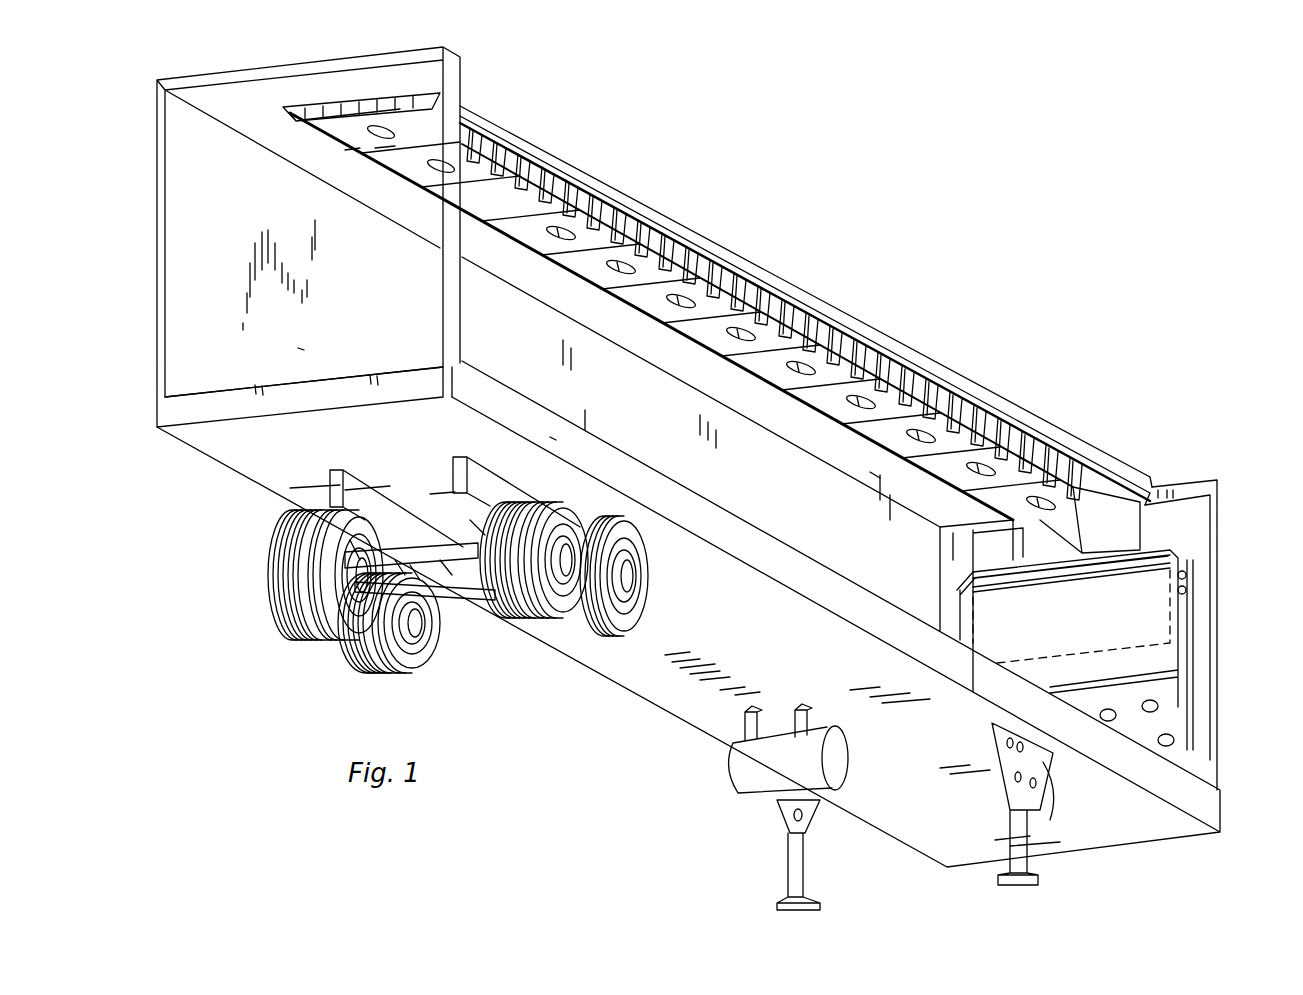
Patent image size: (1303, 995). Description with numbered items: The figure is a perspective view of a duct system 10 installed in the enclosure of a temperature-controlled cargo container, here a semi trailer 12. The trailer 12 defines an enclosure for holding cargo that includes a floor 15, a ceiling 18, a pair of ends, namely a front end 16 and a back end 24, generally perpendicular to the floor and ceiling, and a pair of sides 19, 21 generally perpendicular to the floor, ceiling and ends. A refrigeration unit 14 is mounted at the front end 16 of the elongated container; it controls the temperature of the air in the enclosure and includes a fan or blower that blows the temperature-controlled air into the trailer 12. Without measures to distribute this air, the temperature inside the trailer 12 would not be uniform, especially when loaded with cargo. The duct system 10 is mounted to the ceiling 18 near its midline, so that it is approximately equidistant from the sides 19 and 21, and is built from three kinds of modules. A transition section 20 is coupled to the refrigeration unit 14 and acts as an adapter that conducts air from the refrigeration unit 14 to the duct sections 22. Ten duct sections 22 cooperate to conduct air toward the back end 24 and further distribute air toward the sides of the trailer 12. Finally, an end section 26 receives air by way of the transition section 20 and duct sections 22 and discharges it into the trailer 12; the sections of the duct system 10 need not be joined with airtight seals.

The duct system 10 is at (330, 96).
The semi trailer 12 is at (620, 683).
The refrigeration unit 14 is at (1172, 533).
The floor 15 is at (720, 500).
The front end 16 is at (1193, 527).
The ceiling 18 is at (870, 472).
The side 19 is at (308, 350).
The transition section 20 is at (1113, 487).
The side 21 is at (560, 441).
The duct sections 22 is at (568, 182).
The back end 24 is at (160, 210).
The end section 26 is at (397, 97).